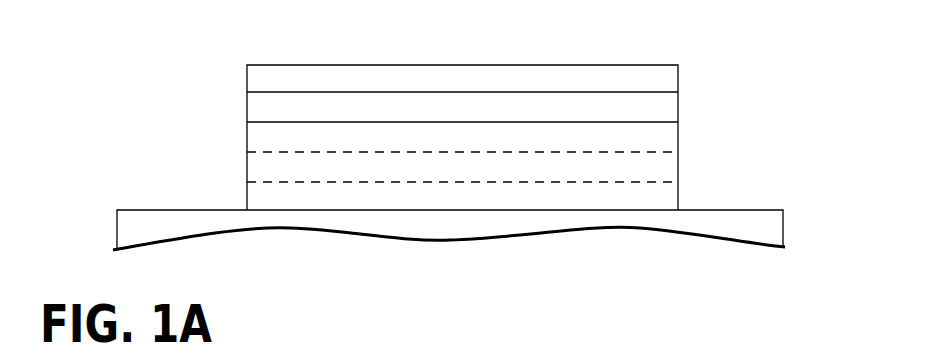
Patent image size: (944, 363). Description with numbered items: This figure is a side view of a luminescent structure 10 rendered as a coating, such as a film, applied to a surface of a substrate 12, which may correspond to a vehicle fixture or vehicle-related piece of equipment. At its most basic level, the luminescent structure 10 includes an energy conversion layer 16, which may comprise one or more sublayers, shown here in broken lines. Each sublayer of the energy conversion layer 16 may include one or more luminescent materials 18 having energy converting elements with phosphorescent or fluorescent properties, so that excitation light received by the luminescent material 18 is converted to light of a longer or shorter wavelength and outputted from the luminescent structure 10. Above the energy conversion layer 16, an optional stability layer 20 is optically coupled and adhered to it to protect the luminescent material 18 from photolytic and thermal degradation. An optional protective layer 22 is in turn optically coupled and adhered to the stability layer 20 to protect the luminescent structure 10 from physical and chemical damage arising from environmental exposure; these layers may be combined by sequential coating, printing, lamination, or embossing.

The luminescent structure 10 is at (612, 38).
The substrate 12 is at (725, 210).
The energy conversion layer 16 is at (247, 163).
The luminescent material 18 is at (628, 168).
The stability layer 20 is at (247, 105).
The protective layer 22 is at (343, 64).